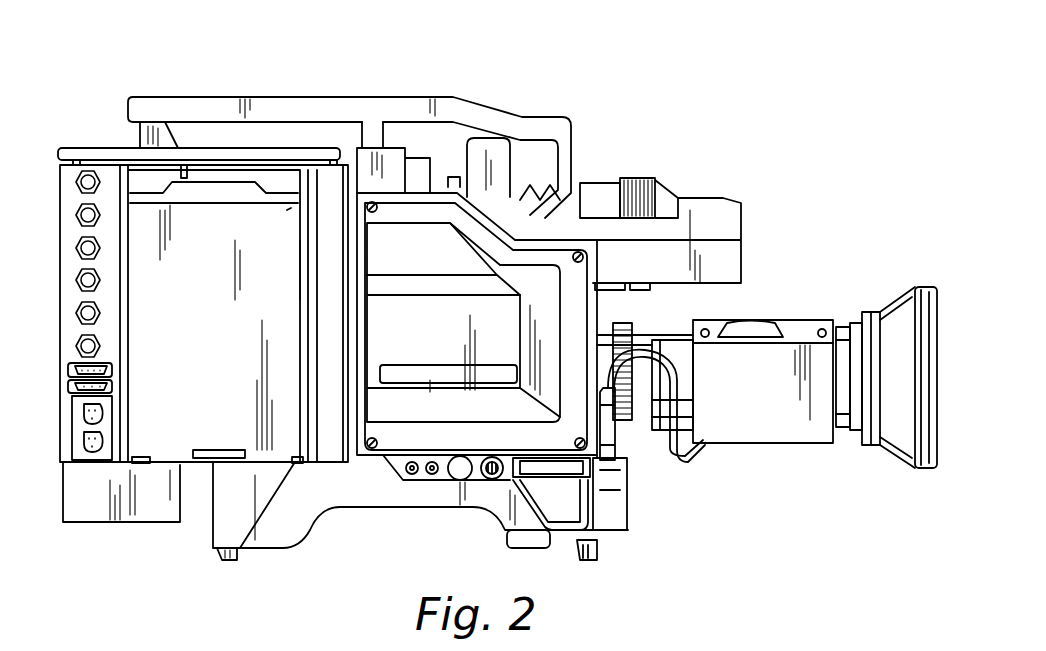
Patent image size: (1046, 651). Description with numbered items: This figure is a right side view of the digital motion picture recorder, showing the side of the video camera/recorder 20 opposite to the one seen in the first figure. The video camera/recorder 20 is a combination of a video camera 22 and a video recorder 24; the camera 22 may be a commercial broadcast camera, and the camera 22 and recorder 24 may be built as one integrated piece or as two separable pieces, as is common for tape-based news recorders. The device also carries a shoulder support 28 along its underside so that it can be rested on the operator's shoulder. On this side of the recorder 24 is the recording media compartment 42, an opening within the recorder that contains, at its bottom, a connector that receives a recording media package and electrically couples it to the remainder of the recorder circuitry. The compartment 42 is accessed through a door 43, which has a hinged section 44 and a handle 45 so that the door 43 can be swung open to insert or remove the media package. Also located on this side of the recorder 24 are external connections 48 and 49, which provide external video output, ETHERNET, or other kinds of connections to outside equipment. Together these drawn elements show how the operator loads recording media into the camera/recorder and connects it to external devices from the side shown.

The video camera/recorder 20 is at (497, 290).
The video camera 22 is at (550, 255).
The video recorder 24 is at (202, 155).
The shoulder support 28 is at (438, 508).
The recording media compartment 42 is at (203, 312).
The door 43 is at (230, 292).
The hinged section 44 is at (292, 460).
The handle 45 is at (238, 187).
The external connection 48 is at (112, 380).
The external connection 49 is at (106, 424).